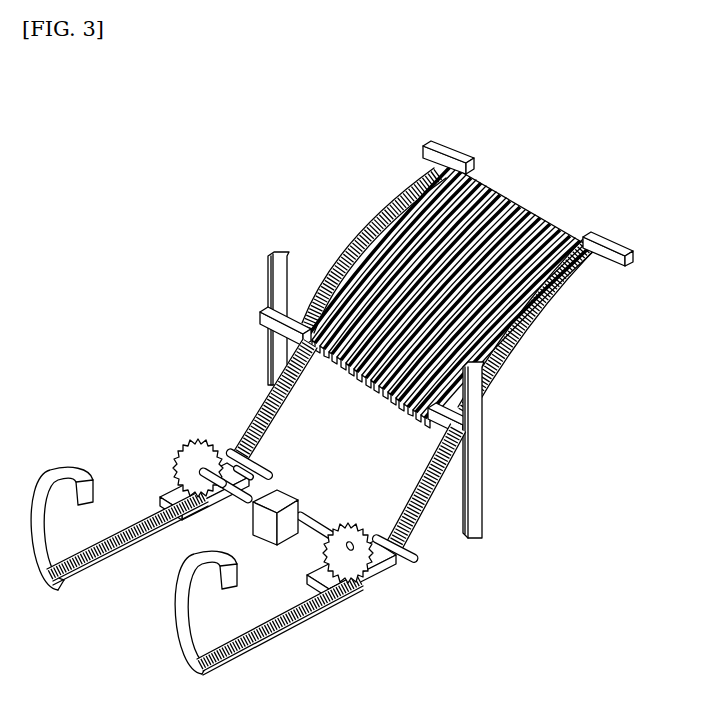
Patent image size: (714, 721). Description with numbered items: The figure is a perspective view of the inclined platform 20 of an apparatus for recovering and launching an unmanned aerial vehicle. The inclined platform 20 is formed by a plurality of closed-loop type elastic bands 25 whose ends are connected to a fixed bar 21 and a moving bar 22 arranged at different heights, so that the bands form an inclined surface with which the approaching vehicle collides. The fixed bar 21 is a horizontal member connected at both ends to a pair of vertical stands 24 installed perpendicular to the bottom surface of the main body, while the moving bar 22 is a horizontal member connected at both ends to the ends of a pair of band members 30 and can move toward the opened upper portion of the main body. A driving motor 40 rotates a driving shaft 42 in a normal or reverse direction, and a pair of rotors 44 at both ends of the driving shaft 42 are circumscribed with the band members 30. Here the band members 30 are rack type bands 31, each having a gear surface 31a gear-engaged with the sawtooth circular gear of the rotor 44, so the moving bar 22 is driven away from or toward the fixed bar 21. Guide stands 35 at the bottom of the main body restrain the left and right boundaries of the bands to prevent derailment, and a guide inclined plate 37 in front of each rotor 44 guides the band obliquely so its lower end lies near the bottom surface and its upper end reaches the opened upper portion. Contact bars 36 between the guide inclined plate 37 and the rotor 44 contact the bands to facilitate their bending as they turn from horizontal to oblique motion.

The inclined platform 20 is at (510, 170).
The fixed bar 21 is at (470, 428).
The moving bar 22 is at (430, 143).
The vertical stands 24 is at (482, 408).
The closed-loop type elastic bands 25 is at (423, 267).
The band members 30 is at (120, 567).
The rack type bands 31 is at (120, 537).
The gear surface 31a is at (150, 520).
The guide stands 35 is at (313, 612).
The contact bars 36 is at (418, 559).
The guide inclined plate 37 is at (295, 415).
The driving motor 40 is at (253, 518).
The driving shaft 42 is at (207, 462).
The rotors 44 is at (360, 565).